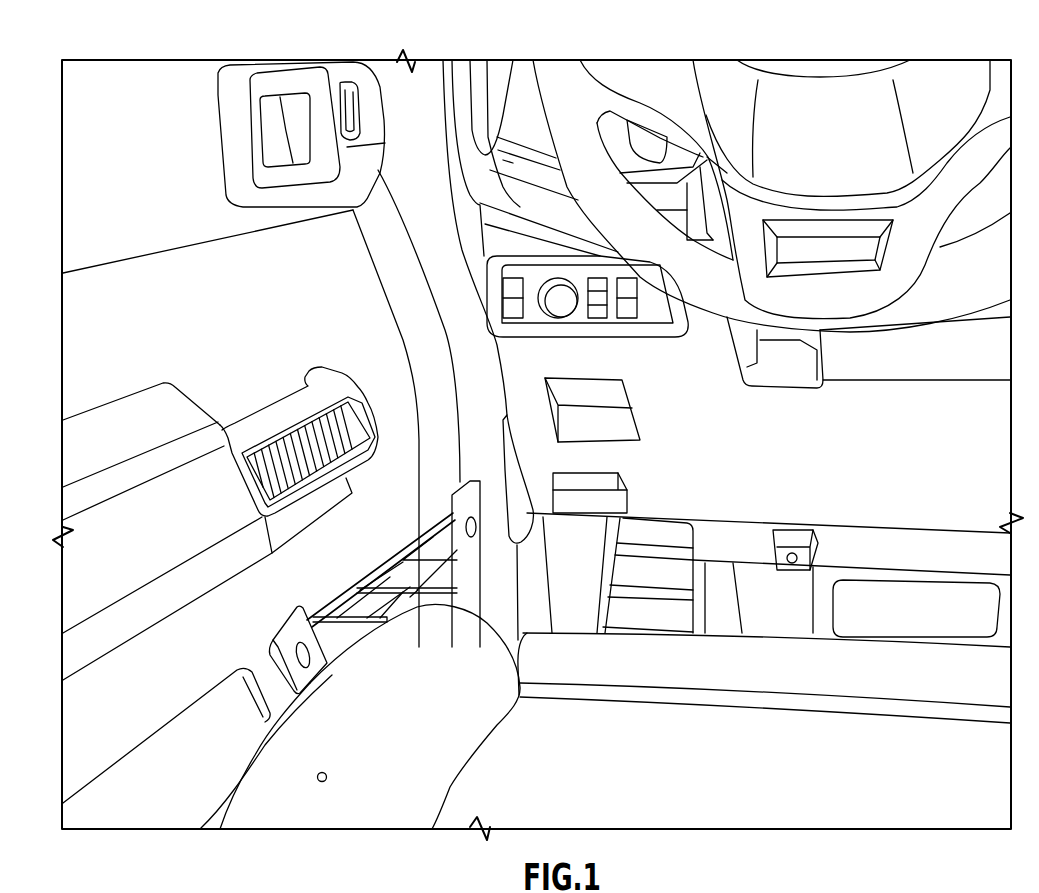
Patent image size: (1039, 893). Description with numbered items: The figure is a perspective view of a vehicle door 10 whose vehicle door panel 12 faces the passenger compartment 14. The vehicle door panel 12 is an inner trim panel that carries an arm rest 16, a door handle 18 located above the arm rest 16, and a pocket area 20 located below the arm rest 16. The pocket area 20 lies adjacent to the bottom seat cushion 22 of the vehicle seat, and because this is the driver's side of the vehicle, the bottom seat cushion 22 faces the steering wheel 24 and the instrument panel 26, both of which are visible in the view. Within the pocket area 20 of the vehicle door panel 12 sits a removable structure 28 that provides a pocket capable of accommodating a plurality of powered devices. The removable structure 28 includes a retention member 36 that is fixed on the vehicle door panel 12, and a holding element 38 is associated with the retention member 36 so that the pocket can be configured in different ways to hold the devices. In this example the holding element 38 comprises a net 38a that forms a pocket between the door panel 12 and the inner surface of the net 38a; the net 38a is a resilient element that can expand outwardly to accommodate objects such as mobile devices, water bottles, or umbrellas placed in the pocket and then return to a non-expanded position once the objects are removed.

The vehicle door 10 is at (200, 55).
The vehicle door panel 12 is at (377, 223).
The passenger compartment 14 is at (490, 378).
The arm rest 16 is at (98, 422).
The door handle 18 is at (322, 83).
The pocket area 20 is at (434, 503).
The bottom seat cushion 22 is at (480, 793).
The steering wheel 24 is at (570, 103).
The instrument panel 26 is at (476, 120).
The removable structure 28 is at (293, 689).
The retention member 36 is at (467, 598).
The holding element 38 is at (353, 588).
The net 38a is at (340, 618).